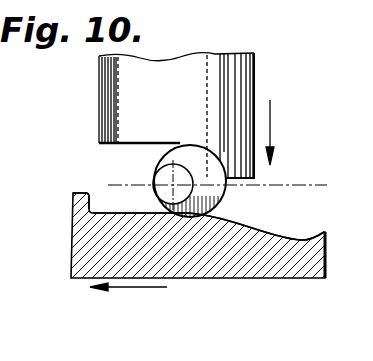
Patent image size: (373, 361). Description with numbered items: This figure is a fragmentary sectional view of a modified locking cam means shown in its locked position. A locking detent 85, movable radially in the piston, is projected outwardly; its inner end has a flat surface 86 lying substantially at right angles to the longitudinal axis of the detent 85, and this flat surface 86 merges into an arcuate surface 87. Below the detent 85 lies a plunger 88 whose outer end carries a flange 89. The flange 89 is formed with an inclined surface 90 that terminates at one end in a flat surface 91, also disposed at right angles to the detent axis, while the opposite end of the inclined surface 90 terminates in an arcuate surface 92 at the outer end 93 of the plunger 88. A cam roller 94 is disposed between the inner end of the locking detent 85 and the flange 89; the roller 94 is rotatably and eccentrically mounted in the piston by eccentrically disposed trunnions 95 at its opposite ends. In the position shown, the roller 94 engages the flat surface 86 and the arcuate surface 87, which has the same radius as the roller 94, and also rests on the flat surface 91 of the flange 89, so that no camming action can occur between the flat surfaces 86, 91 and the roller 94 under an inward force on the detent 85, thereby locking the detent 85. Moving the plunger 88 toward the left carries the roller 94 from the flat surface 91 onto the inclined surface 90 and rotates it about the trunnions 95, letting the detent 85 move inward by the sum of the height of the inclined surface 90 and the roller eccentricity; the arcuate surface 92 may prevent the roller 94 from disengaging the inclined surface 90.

The locking detent 85 is at (254, 68).
The flat surface 86 is at (113, 145).
The arcuate surface 87 is at (216, 155).
The plunger 88 is at (72, 247).
The flange 89 is at (80, 191).
The inclined surface 90 is at (257, 230).
The flat surface 91 is at (133, 212).
The arcuate surface 92 is at (323, 232).
The outer end 93 is at (326, 265).
The cam roller 94 is at (223, 190).
The trunnions 95 is at (166, 183).